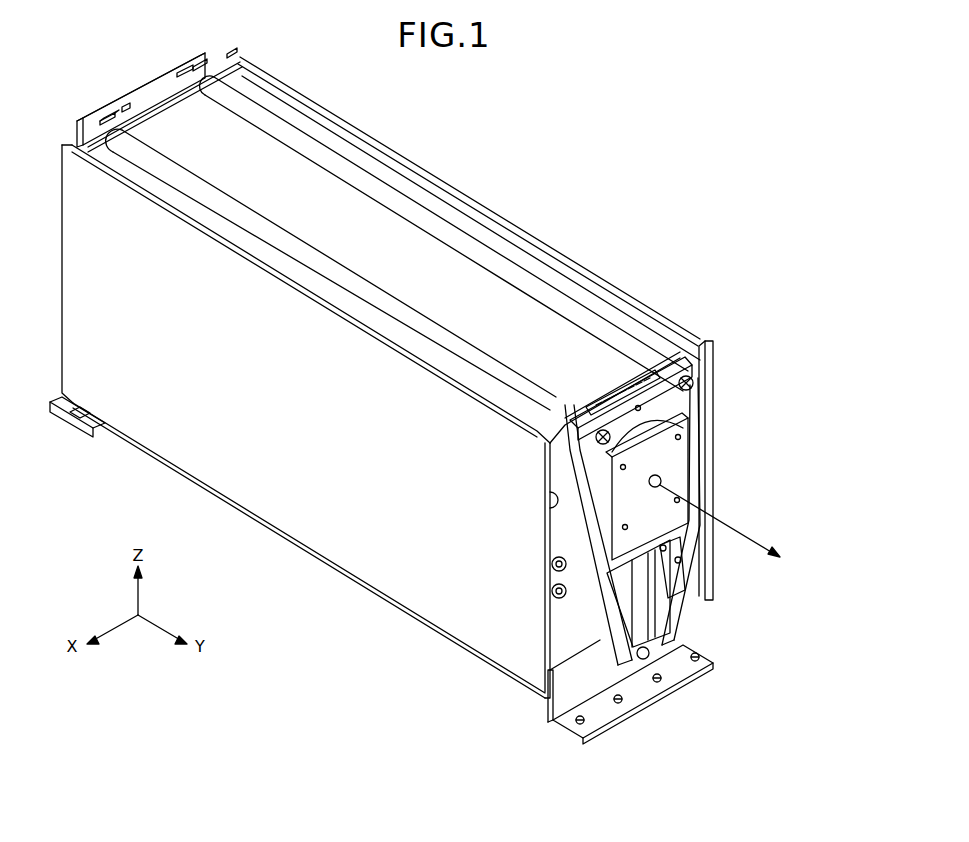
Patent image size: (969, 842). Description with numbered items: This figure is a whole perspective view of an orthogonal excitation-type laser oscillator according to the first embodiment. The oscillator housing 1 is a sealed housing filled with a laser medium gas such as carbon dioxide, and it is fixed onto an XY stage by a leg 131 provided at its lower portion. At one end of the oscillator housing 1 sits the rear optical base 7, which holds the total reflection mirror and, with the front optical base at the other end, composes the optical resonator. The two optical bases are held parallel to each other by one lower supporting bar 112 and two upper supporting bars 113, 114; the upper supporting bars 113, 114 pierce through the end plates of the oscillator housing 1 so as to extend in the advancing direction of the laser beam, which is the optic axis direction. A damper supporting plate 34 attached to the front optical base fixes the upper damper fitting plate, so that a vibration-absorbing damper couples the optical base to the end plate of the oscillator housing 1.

The oscillator housing 1 is at (595, 273).
The rear optical base 7 is at (104, 104).
The upper supporting bar 113 is at (501, 378).
The upper supporting bar 114 is at (607, 323).
The damper supporting plate 34 is at (686, 590).
The lower supporting bar 112 is at (684, 660).
The leg 131 is at (70, 452).